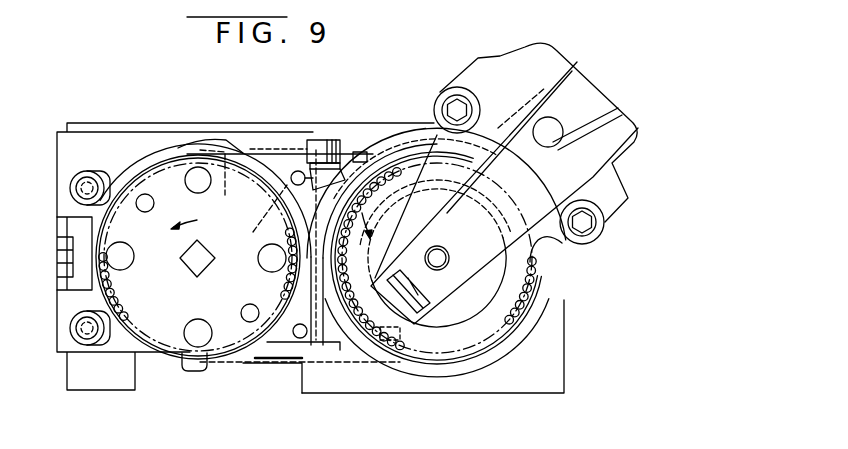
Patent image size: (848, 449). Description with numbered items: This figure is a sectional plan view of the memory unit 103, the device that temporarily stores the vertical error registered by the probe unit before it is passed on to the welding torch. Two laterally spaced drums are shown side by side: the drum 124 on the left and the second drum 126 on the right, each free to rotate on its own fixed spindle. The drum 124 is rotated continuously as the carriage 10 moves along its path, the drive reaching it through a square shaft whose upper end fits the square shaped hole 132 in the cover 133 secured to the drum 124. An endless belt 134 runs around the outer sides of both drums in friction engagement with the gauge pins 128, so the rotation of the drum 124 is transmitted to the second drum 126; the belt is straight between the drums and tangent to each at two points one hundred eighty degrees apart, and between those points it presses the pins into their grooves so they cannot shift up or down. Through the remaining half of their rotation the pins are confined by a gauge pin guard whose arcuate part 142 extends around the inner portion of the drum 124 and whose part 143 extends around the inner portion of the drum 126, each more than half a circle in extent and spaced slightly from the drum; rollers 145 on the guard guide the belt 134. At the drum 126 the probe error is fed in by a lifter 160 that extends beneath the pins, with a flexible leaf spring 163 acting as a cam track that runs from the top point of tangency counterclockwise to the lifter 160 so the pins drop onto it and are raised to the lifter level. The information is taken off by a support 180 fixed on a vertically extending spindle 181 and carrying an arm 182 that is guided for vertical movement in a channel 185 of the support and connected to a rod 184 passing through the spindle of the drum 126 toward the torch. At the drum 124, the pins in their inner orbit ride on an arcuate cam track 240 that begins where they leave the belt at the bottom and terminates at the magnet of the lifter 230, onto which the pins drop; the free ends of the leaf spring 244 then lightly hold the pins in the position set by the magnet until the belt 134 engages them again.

The carriage 10 is at (110, 73).
The memory unit 103 is at (258, 367).
The drum 124 is at (130, 337).
The second drum 126 is at (443, 345).
The gauge pins 128 is at (98, 259).
The square shaped hole 132 is at (203, 263).
The cover 133 is at (167, 177).
The endless belt 134 is at (322, 362).
The guard part 142 is at (207, 366).
The guard part 143 is at (357, 173).
The rollers 145 is at (332, 140).
The lifter 160 is at (400, 330).
The flexible leaf spring 163 is at (362, 205).
The support 180 is at (545, 268).
The spindle 181 is at (562, 132).
The arm 182 is at (478, 244).
The rod 184 is at (440, 262).
The channel 185 is at (487, 178).
The lifter 230 is at (225, 184).
The cam track 240 is at (261, 214).
The leaf spring 244 is at (263, 150).